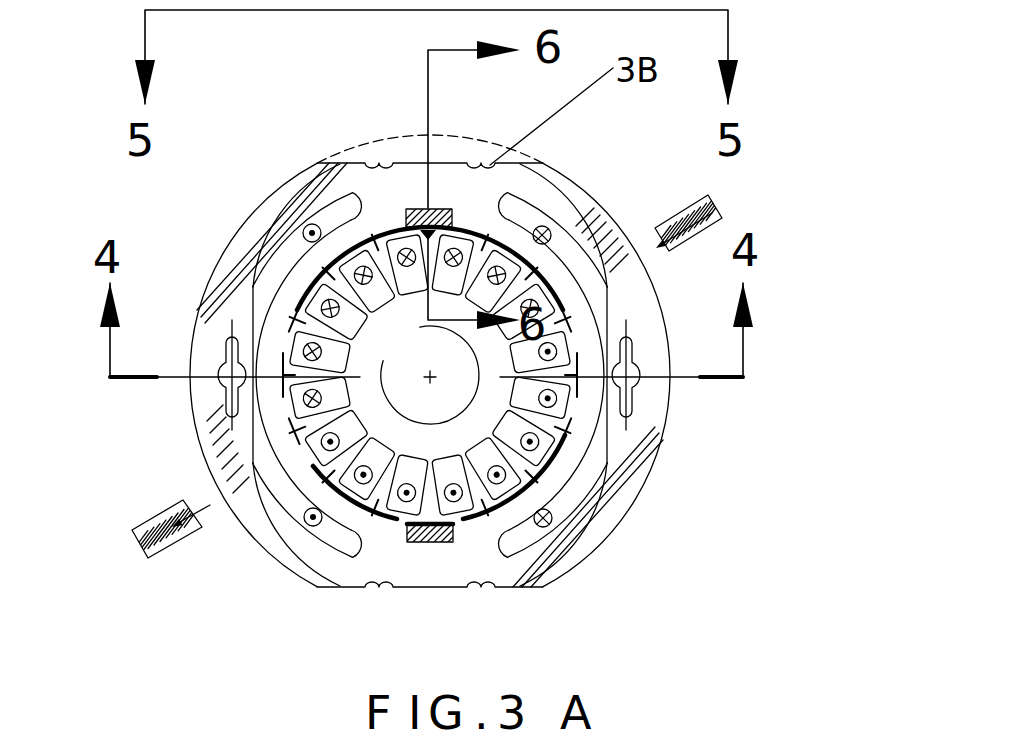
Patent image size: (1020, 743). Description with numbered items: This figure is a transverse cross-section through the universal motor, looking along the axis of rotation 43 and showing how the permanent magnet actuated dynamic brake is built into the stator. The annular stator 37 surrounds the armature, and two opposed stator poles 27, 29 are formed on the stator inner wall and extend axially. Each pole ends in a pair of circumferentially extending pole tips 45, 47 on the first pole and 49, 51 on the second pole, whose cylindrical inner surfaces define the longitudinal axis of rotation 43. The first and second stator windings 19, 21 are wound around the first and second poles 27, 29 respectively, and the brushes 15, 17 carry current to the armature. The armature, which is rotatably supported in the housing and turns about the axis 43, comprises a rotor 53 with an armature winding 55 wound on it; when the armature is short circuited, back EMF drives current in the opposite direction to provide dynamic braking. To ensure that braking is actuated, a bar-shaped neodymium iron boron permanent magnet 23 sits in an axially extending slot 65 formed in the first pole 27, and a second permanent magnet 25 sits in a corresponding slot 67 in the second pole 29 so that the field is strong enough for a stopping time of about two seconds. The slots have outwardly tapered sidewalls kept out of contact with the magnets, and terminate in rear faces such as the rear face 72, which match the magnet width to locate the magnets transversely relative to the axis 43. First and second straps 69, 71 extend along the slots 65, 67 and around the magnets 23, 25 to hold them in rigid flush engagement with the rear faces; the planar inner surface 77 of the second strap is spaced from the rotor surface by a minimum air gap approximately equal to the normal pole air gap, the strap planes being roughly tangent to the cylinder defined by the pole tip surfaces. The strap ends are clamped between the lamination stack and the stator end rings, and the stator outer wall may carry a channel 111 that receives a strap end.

The brush 15 is at (145, 550).
The brush 17 is at (722, 215).
The first stator winding 19 is at (297, 527).
The second stator winding 21 is at (423, 277).
The permanent magnet 23 is at (410, 212).
The second permanent magnet 25 is at (456, 543).
The stator pole 27 is at (353, 218).
The stator pole 29 is at (395, 518).
The annular stator 37 is at (718, 440).
The longitudinal axis of rotation 43 is at (428, 370).
The pole tip 45 is at (313, 273).
The pole tip 47 is at (560, 289).
The pole tip 49 is at (145, 504).
The pole tip 51 is at (545, 478).
The rotor 53 is at (292, 330).
The armature winding 55 is at (302, 407).
The axially extending slot 65 is at (452, 212).
The axially extending slot 67 is at (457, 527).
The first strap 69 is at (432, 158).
The second strap 71 is at (412, 521).
The rear face 72 is at (410, 545).
The planar inner surface 77 is at (437, 527).
The channel 111 is at (435, 208).